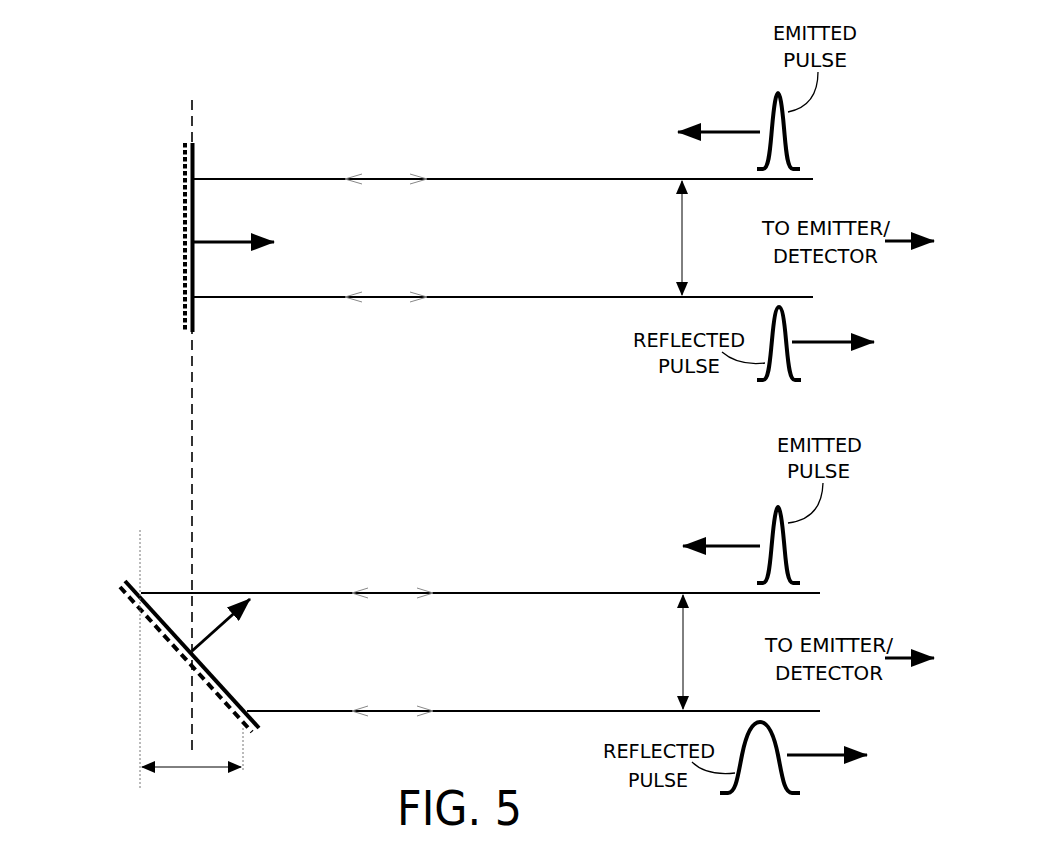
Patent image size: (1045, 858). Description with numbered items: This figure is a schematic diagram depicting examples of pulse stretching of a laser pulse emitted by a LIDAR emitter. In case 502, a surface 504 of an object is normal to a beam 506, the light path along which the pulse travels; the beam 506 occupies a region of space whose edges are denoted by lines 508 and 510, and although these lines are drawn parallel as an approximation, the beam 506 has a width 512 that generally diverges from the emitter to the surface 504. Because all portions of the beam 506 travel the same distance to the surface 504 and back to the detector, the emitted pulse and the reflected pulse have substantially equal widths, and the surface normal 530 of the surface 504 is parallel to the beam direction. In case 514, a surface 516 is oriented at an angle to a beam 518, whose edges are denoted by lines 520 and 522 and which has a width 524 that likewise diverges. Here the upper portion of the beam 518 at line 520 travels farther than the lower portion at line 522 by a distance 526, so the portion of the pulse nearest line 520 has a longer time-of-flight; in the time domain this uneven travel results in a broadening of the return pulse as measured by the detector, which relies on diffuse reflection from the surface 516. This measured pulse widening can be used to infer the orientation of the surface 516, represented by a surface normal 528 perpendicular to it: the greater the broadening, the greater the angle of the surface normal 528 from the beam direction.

The case 502 is at (120, 216).
The surface 504 is at (183, 223).
The beam 506 is at (435, 248).
The line 508 is at (508, 178).
The line 510 is at (510, 297).
The width 512 is at (683, 219).
The case 514 is at (138, 629).
The surface 516 is at (163, 633).
The beam 518 is at (411, 661).
The line 520 is at (518, 592).
The line 522 is at (520, 711).
The width 524 is at (683, 638).
The distance 526 is at (191, 664).
The surface normal 528 is at (208, 638).
The surface normal 530 is at (222, 238).